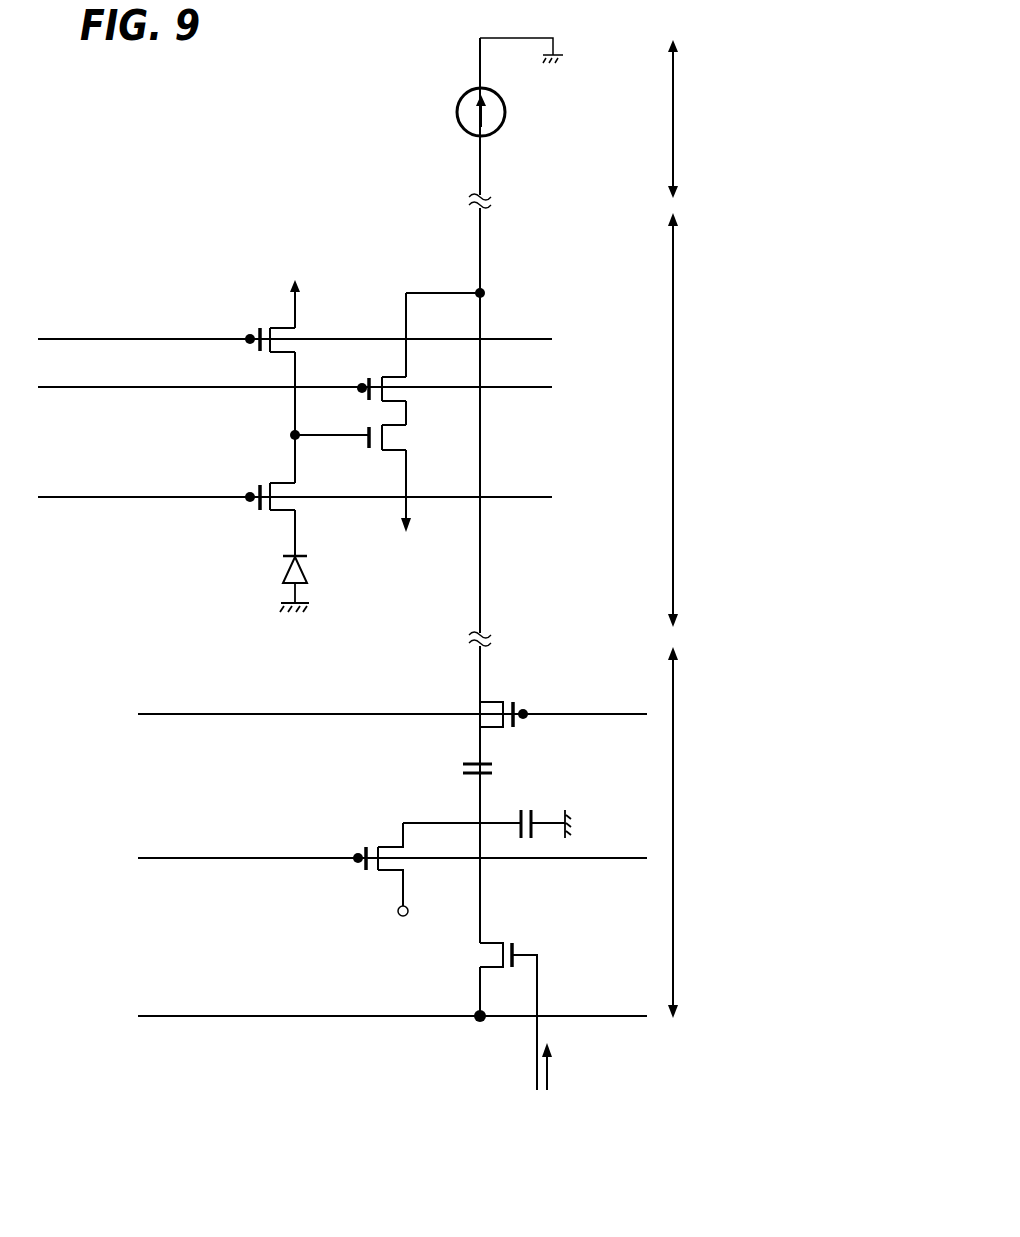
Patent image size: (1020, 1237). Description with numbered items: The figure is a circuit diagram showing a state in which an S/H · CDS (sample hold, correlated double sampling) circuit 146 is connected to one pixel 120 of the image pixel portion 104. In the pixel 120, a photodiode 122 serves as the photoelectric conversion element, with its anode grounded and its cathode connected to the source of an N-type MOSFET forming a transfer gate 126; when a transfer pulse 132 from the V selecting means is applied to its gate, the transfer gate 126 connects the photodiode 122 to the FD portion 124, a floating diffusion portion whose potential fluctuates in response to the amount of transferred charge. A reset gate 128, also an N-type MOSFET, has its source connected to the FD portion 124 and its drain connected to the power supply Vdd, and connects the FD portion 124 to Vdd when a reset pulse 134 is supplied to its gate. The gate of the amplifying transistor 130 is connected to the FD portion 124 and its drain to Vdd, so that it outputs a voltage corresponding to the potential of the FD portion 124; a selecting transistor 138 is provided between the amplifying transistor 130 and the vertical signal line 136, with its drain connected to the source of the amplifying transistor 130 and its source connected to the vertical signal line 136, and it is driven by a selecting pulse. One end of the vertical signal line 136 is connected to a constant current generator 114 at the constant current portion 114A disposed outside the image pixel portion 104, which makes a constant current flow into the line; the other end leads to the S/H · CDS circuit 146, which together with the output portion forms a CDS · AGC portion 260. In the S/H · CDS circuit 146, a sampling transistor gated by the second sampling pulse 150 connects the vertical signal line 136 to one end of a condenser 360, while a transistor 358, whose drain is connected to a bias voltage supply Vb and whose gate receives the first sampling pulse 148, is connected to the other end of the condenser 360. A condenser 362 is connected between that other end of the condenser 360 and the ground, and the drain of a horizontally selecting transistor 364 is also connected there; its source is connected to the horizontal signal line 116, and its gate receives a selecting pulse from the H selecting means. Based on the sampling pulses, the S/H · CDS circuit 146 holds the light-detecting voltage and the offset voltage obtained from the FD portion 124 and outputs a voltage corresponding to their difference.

The constant current generator 114 is at (506, 113).
The constant current portion 114A is at (748, 125).
The image pixel portion 104 is at (738, 416).
The CDS · AGC portion 260 is at (738, 842).
The pixel 120 is at (86, 273).
The photodiode 122 is at (280, 582).
The FD portion 124 is at (290, 435).
The transfer gate 126 is at (277, 513).
The reset gate 128 is at (262, 326).
The amplifying transistor 130 is at (397, 436).
The transfer pulse 132 is at (161, 495).
The reset pulse 134 is at (184, 337).
The vertical signal line 136 is at (481, 543).
The selecting transistor 138 is at (408, 380).
The S/H · CDS circuit 146 is at (577, 674).
The first sampling pulse 148 is at (629, 856).
The second sampling pulse 150 is at (628, 712).
The horizontal signal line 116 is at (577, 1020).
The transistor 358 is at (378, 847).
The condenser 360 is at (463, 765).
The condenser 362 is at (530, 811).
The horizontally selecting transistor 364 is at (512, 943).